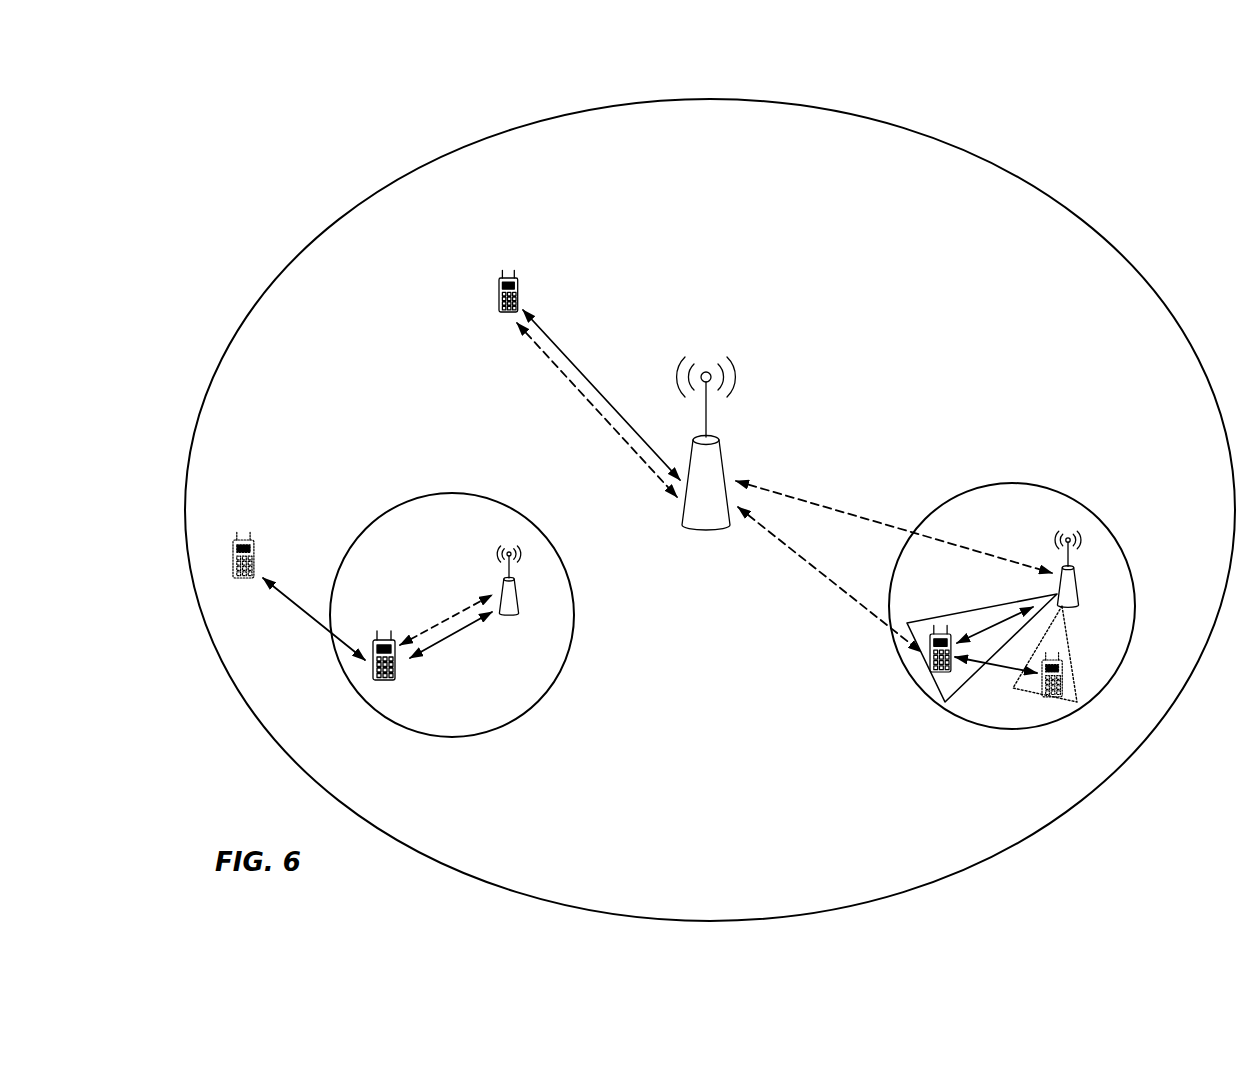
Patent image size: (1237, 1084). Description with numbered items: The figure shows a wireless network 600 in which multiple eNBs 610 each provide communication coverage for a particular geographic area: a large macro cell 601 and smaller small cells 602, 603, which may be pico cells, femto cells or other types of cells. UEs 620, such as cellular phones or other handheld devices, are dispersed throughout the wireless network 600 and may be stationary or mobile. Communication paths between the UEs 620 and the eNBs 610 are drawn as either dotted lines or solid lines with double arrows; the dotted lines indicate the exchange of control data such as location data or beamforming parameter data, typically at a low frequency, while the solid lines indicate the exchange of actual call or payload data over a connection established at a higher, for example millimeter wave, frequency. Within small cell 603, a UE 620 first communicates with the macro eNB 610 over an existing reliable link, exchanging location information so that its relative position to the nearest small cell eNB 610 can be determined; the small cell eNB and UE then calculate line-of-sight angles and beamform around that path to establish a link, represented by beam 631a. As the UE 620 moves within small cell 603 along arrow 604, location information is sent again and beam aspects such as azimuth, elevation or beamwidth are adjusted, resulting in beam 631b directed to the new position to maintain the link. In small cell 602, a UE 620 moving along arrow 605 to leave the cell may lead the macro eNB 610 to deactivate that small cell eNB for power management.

The wireless network 600 is at (1094, 168).
The macro cell 601 is at (317, 238).
The small cell 602 is at (553, 545).
The small cell 603 is at (1091, 509).
The arrow 604 is at (1000, 667).
The arrow 605 is at (300, 612).
The eNB 610 is at (728, 527).
The UE 620 is at (518, 289).
The beam 631a is at (973, 608).
The beam 631b is at (1080, 688).